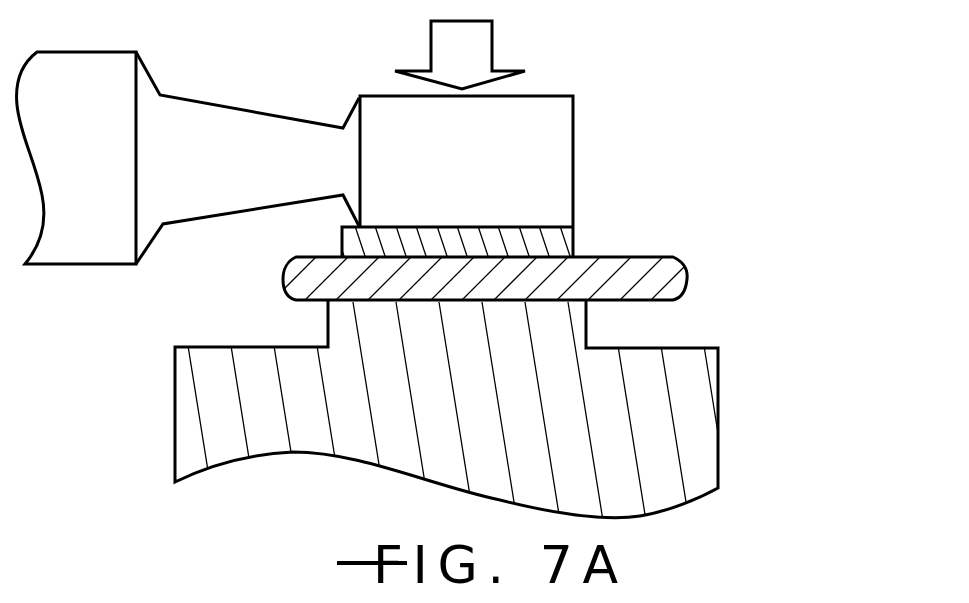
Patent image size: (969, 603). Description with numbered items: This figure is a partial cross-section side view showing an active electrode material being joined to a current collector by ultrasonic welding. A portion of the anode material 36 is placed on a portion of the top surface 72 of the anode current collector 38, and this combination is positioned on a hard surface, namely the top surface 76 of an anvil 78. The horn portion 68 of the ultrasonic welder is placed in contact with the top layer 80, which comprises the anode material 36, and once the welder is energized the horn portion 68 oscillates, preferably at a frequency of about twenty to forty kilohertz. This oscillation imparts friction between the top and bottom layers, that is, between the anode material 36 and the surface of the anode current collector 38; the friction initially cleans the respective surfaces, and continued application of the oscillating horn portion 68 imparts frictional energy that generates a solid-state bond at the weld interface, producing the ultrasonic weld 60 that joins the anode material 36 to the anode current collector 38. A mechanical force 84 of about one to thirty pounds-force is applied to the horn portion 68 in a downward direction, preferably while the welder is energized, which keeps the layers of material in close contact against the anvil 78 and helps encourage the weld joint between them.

The mechanical force 84 is at (439, 47).
The top layer 80 is at (355, 222).
The horn portion 68 is at (568, 125).
The ultrasonic weld 60 is at (538, 252).
The anode material 36 is at (572, 246).
The top surface 72 is at (645, 252).
The anode current collector 38 is at (670, 277).
The top surface 76 is at (343, 292).
The anvil 78 is at (707, 418).